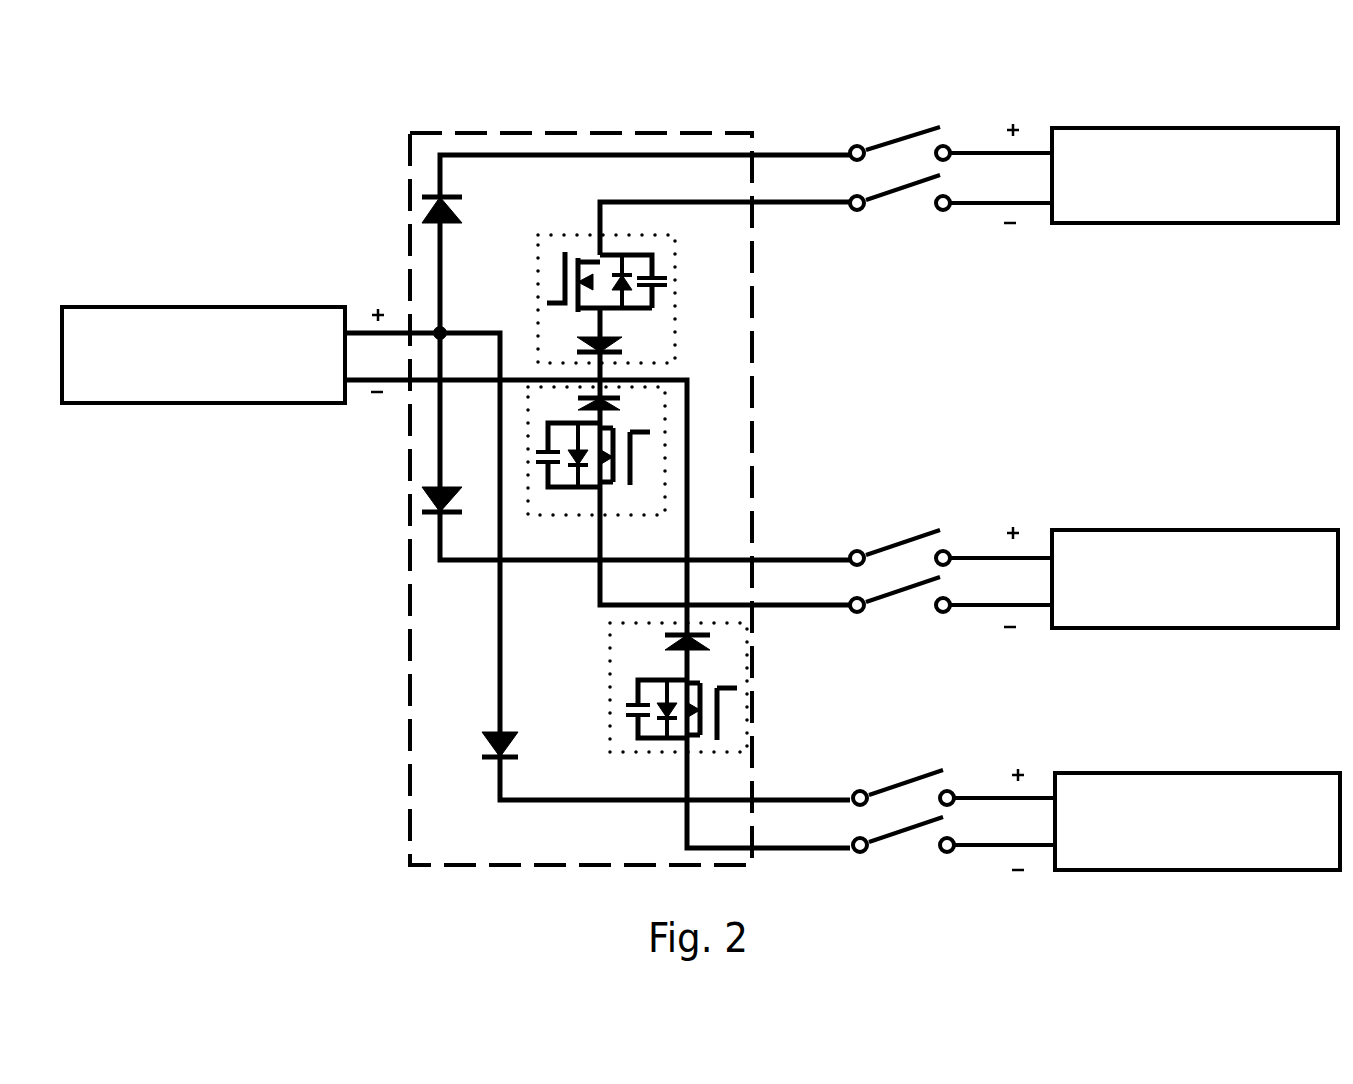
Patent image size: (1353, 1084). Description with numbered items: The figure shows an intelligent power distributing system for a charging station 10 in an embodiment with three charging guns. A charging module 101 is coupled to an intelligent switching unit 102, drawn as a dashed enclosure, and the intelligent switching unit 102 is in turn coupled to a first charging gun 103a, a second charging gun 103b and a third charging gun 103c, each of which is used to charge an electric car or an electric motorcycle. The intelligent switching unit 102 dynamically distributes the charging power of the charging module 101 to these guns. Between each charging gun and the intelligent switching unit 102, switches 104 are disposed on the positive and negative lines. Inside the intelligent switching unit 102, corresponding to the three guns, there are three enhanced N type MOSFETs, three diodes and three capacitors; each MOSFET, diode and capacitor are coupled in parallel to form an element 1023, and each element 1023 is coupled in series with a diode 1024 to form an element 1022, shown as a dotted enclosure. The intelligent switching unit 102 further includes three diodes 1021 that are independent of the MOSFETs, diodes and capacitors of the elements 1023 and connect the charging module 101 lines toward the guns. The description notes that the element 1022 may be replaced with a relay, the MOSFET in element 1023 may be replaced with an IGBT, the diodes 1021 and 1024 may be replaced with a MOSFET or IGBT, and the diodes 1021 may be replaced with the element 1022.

The charging station 10 is at (318, 207).
The charging module 101 is at (278, 305).
The intelligent switching unit 102 is at (581, 453).
The diode 1021 is at (462, 212).
The element 1022 is at (538, 325).
The element 1023 is at (652, 262).
The diode 1024 is at (618, 340).
The first charging gun 103a is at (1070, 128).
The second charging gun 103b is at (1075, 530).
The third charging gun 103c is at (1077, 773).
The switch 104 is at (880, 140).